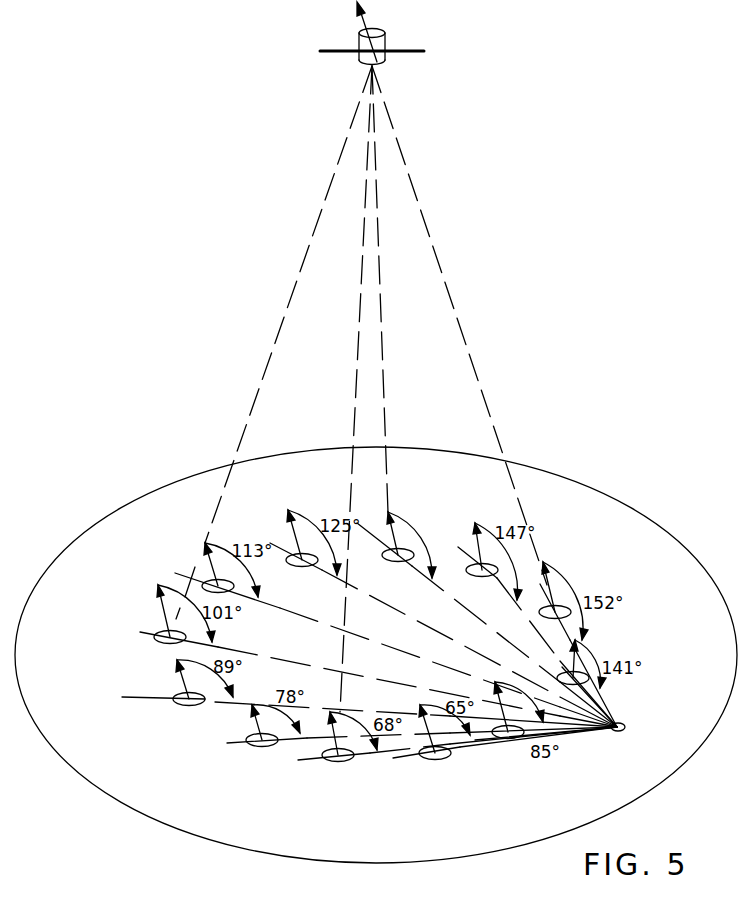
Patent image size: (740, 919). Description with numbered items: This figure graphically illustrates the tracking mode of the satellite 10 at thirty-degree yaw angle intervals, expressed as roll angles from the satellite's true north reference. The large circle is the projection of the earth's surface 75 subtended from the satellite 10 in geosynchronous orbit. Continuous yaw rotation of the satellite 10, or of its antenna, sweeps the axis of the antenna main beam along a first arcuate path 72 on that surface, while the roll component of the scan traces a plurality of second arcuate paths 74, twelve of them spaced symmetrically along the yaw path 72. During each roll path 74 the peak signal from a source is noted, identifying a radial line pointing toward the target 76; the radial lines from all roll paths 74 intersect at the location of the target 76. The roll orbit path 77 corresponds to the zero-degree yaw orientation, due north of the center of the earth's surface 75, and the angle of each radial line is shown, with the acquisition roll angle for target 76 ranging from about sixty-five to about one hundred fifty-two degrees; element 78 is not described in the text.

The satellite 10 is at (386, 30).
The first arcuate path 72 is at (167, 658).
The second arcuate path 74 is at (192, 706).
The earth's surface projection 75 is at (603, 497).
The target 76 is at (625, 731).
The roll orbit path 77 is at (385, 547).
The sensor line of sight 78 is at (130, 697).